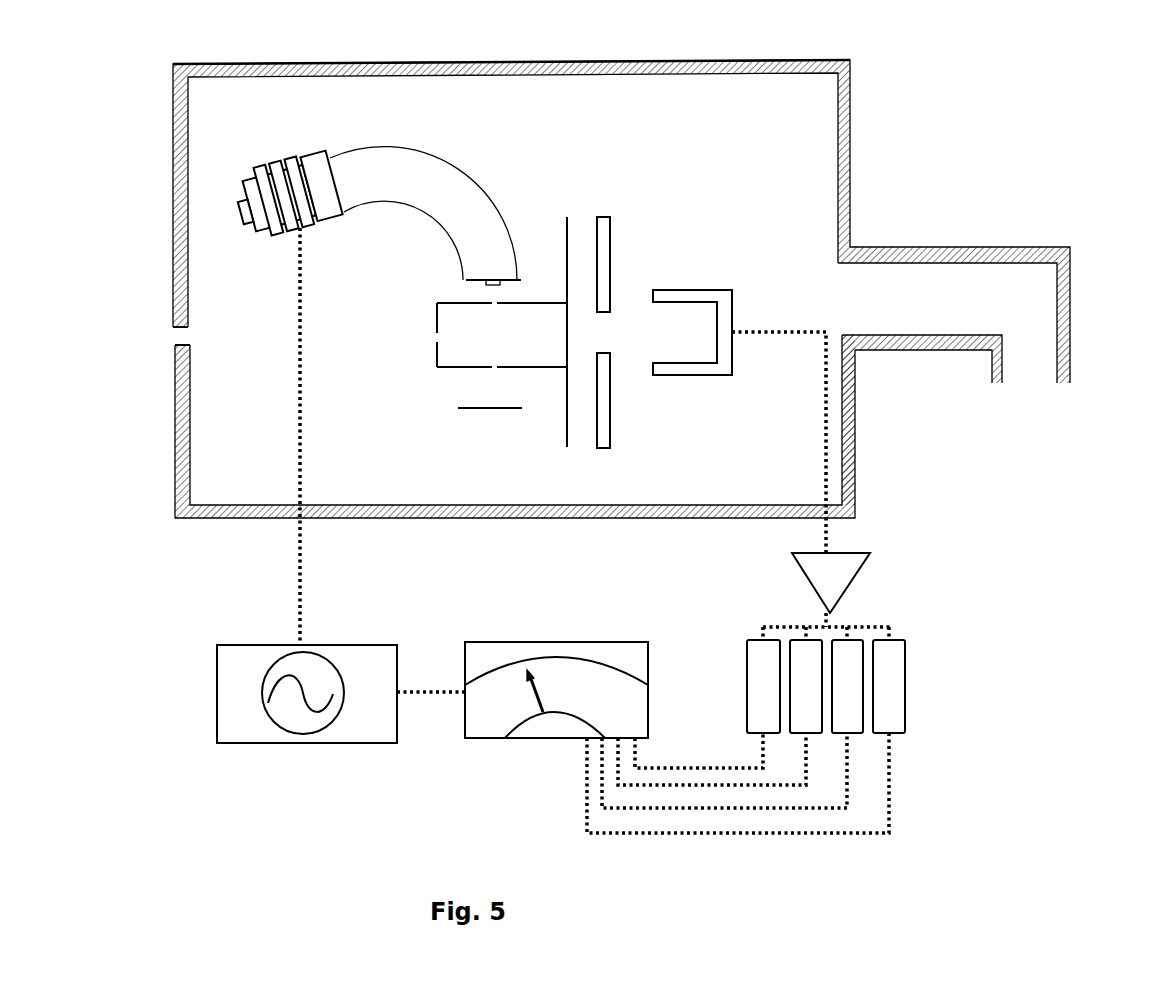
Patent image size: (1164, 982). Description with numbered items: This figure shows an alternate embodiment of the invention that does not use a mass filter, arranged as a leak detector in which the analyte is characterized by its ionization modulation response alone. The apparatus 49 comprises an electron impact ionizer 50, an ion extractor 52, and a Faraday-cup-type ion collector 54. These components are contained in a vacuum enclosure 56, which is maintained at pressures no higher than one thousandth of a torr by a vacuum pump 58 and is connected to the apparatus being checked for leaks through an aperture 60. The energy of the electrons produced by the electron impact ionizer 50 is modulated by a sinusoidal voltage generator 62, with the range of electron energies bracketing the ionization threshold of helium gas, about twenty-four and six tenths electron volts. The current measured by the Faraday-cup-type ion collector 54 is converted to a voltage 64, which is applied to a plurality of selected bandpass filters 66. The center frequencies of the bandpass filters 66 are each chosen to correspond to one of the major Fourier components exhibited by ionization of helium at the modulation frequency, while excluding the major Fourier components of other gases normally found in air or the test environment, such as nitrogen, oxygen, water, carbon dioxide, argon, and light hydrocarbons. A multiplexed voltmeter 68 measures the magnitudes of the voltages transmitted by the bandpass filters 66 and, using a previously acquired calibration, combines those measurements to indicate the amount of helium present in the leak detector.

The apparatus 49 is at (869, 98).
The electron impact ionizer 50 is at (405, 137).
The ion extractor 52 is at (604, 189).
The Faraday-cup-type ion collector 54 is at (701, 263).
The vacuum enclosure 56 is at (924, 234).
The vacuum pump 58 is at (1031, 374).
The aperture 60 is at (157, 358).
The sinusoidal voltage generator 62 is at (241, 767).
The voltage 64 is at (883, 570).
The bandpass filters 66 is at (867, 688).
The multiplexed voltmeter 68 is at (504, 763).